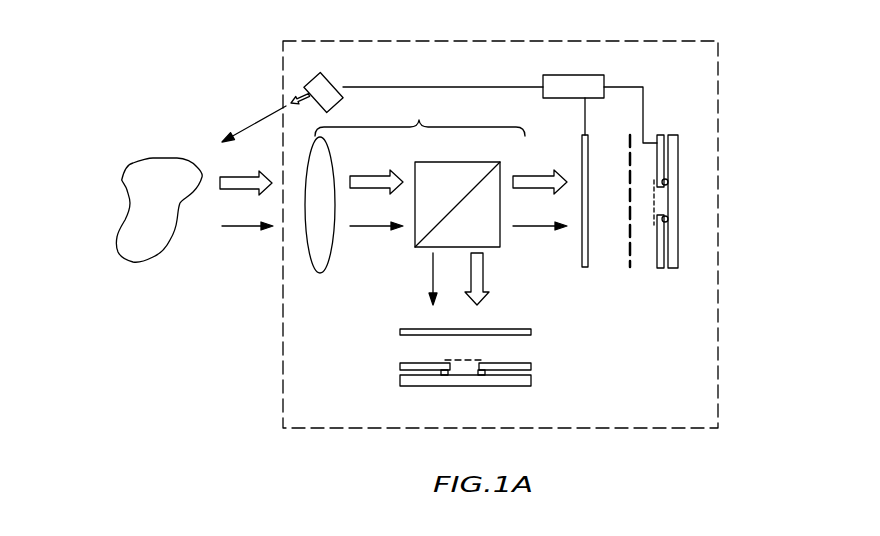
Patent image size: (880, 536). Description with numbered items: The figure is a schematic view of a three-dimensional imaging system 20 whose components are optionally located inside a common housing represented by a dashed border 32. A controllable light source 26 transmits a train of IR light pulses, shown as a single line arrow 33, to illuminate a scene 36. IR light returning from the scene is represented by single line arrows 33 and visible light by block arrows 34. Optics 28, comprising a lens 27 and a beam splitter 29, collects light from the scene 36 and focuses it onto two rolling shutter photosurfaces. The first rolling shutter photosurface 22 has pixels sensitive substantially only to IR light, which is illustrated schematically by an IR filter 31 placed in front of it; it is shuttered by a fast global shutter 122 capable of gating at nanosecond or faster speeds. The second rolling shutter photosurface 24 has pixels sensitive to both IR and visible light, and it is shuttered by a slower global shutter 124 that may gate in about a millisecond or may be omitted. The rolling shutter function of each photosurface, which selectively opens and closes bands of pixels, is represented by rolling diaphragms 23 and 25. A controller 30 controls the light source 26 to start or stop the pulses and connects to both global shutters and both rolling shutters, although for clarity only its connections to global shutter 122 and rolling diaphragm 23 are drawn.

The 3D imaging system 20 is at (736, 74).
The first rolling shutter photosurface 22 is at (678, 170).
The rolling diaphragm 23 is at (657, 260).
The second rolling shutter photosurface 24 is at (510, 386).
The rolling diaphragm 25 is at (510, 363).
The controllable light source 26 is at (330, 74).
The lens 27 is at (330, 255).
The optics 28 is at (427, 195).
The beam splitter 29 is at (501, 246).
The controller 30 is at (573, 76).
The IR filter 31 is at (629, 143).
The dashed border 32 is at (668, 40).
The single line arrows 33 is at (257, 120).
The block arrows 34 is at (250, 176).
The scene 36 is at (157, 132).
The global shutter 122 is at (588, 248).
The global shutter 124 is at (400, 333).